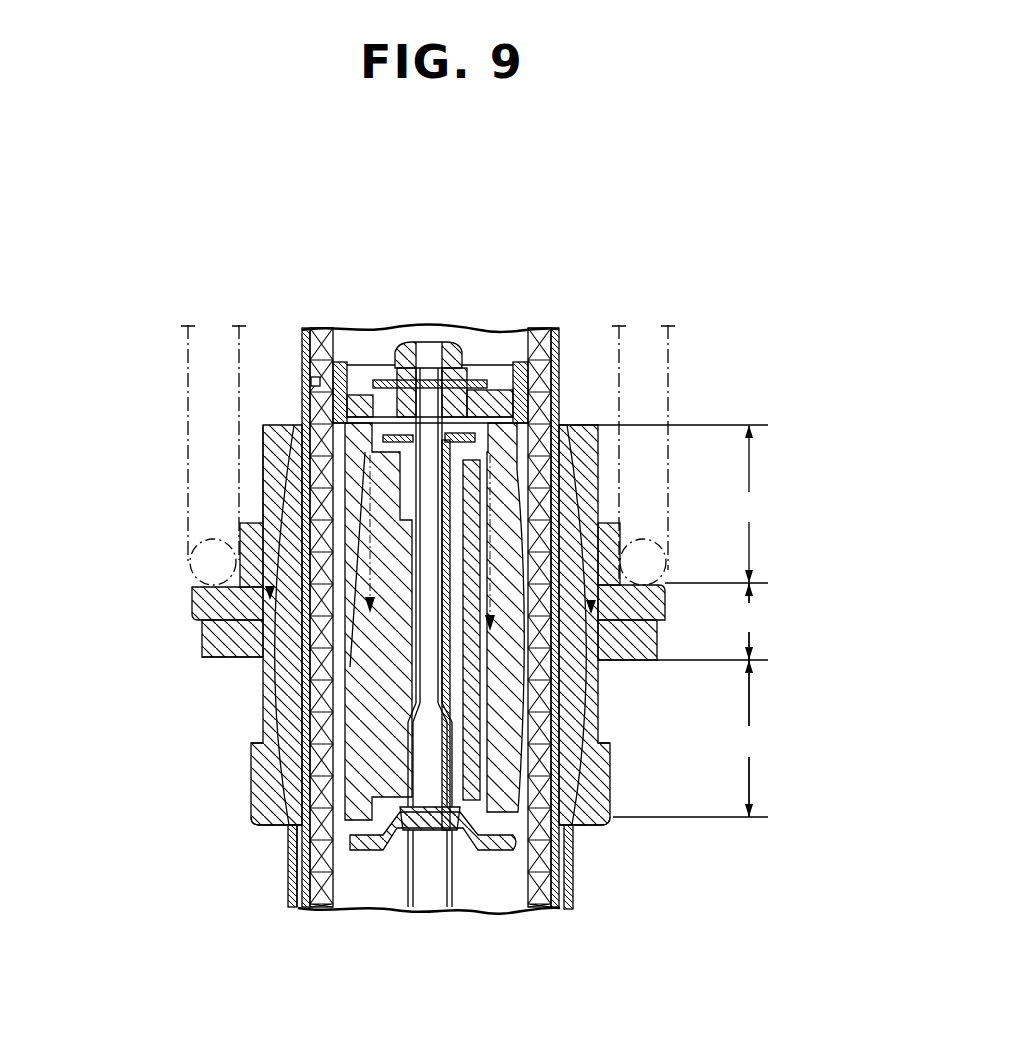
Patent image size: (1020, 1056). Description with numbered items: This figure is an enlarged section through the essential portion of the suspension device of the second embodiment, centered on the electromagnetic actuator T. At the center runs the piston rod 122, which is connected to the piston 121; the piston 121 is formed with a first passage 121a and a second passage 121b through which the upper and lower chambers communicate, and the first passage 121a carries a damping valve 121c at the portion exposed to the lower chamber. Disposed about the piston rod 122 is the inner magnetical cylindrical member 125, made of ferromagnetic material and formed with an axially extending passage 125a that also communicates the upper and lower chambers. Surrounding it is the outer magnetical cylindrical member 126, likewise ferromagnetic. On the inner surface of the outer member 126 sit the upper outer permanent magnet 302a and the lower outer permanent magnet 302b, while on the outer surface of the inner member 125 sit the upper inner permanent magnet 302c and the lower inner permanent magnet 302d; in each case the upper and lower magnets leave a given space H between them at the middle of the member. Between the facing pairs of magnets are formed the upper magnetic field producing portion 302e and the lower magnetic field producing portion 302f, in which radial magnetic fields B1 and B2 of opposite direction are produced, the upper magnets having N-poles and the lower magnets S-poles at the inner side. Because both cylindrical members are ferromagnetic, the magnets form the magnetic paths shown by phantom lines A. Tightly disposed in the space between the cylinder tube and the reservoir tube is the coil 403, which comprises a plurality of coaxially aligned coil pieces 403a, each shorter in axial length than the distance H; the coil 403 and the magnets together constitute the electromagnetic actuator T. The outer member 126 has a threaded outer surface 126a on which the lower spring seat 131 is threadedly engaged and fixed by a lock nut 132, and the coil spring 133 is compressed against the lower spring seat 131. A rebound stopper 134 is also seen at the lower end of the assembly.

The piston 121 is at (477, 367).
The first passage 121a is at (380, 382).
The second passage 121b is at (357, 383).
The damping valve 121c is at (547, 407).
The piston rod 122 is at (423, 897).
The inner magnetical cylindrical member 125 is at (382, 765).
The axially extending passage 125a is at (577, 448).
The outer magnetical cylindrical member 126 is at (258, 654).
The threaded outer surface 126a is at (602, 503).
The lower spring seat 131 is at (208, 593).
The lock nut 132 is at (213, 633).
The coil spring 133 is at (211, 529).
The rebound stopper 134 is at (352, 848).
The upper outer permanent magnet 302a is at (570, 425).
The lower outer permanent magnet 302b is at (583, 833).
The upper inner permanent magnet 302c is at (583, 423).
The lower inner permanent magnet 302d is at (572, 870).
The upper magnetic field producing portion 302e is at (486, 571).
The lower magnetic field producing portion 302f is at (757, 738).
The coil 403 is at (317, 347).
The coil piece 403a is at (318, 383).
The magnetic path A is at (597, 680).
The magnetic field B1 is at (262, 452).
The magnetic field B2 is at (288, 852).
The given space H is at (747, 621).
The electromagnetic actuator T is at (248, 711).